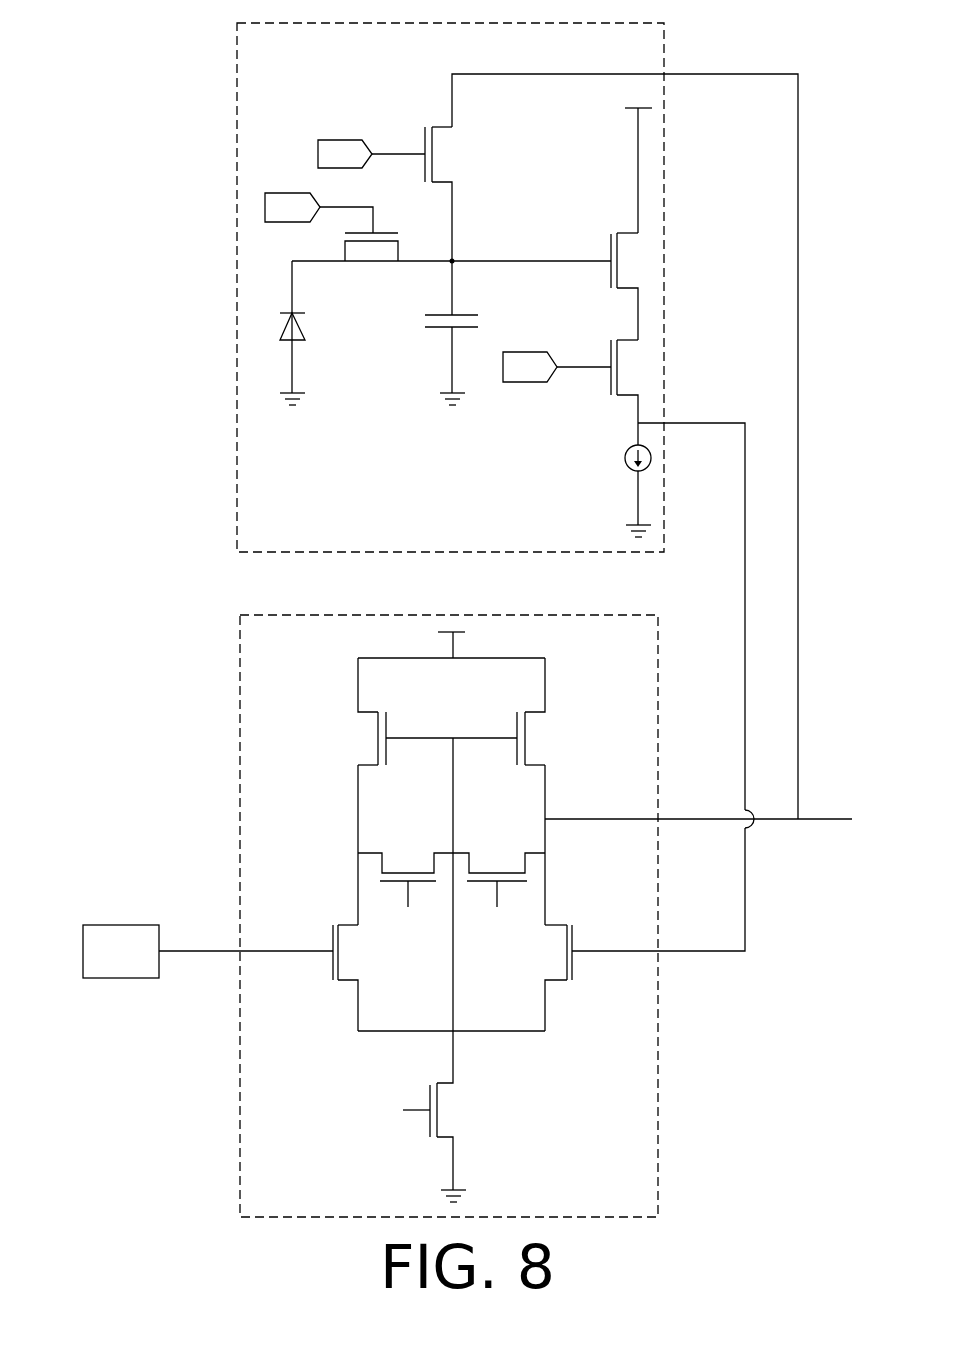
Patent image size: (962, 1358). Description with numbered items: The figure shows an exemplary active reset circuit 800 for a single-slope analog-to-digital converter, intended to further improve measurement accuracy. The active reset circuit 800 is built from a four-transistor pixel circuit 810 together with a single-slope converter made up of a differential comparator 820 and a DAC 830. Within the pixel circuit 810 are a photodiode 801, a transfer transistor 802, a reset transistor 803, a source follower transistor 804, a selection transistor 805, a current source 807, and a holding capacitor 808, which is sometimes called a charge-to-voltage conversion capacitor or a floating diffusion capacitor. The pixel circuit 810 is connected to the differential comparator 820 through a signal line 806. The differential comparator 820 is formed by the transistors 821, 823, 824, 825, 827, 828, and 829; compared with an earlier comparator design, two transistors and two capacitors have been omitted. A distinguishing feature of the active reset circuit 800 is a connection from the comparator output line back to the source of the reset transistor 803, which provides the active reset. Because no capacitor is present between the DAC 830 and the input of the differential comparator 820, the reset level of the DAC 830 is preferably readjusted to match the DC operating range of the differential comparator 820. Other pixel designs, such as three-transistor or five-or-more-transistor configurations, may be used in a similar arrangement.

The active reset circuit 800 is at (843, 38).
The photodiode 801 is at (283, 330).
The transfer transistor 802 is at (345, 250).
The reset transistor 803 is at (425, 139).
The source follower transistor 804 is at (628, 285).
The selection transistor 805 is at (628, 391).
The signal line 806 is at (745, 576).
The current source 807 is at (653, 452).
The holding capacitor 808 is at (462, 332).
The pixel circuit 810 is at (273, 45).
The differential comparator 820 is at (648, 638).
The transistor 821 is at (378, 738).
The transistor 823 is at (340, 946).
The transistor 824 is at (420, 872).
The transistor 825 is at (525, 738).
The transistor 827 is at (565, 952).
The transistor 828 is at (509, 872).
The transistor 829 is at (437, 1085).
The DAC 830 is at (118, 925).